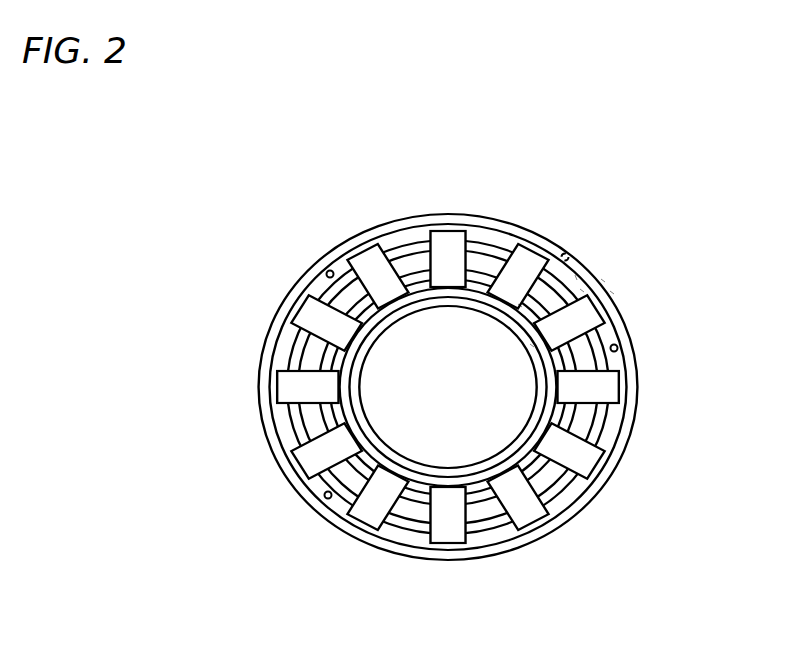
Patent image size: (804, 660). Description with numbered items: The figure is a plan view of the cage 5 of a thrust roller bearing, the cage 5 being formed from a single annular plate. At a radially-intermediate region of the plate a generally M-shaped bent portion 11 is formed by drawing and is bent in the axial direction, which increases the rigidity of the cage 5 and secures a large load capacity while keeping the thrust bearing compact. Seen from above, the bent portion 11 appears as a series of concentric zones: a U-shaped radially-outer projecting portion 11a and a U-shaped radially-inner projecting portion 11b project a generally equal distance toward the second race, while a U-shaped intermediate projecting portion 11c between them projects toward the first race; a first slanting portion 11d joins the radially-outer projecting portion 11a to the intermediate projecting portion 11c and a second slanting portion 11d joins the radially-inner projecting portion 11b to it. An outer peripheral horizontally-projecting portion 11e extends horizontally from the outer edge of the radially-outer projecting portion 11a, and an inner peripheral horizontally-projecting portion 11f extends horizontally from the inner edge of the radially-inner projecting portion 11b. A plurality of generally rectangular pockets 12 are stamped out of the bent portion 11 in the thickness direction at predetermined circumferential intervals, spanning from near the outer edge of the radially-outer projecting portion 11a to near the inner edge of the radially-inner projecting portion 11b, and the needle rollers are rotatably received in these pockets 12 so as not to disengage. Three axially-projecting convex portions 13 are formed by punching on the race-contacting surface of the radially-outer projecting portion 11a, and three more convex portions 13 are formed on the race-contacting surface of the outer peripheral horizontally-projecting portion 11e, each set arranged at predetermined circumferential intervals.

The cage 5 is at (462, 214).
The generally M-shaped bent portion 11 is at (485, 263).
The pockets 12 is at (447, 237).
The axially-projecting convex portions 13 is at (327, 270).
The radially-outer projecting portion 11a is at (582, 290).
The radially-inner projecting portion 11b is at (523, 316).
The intermediate projecting portion 11c is at (603, 280).
The slanting portion 11d is at (612, 292).
The outer peripheral horizontally-projecting portion 11e is at (572, 277).
The inner peripheral horizontally-projecting portion 11f is at (520, 305).